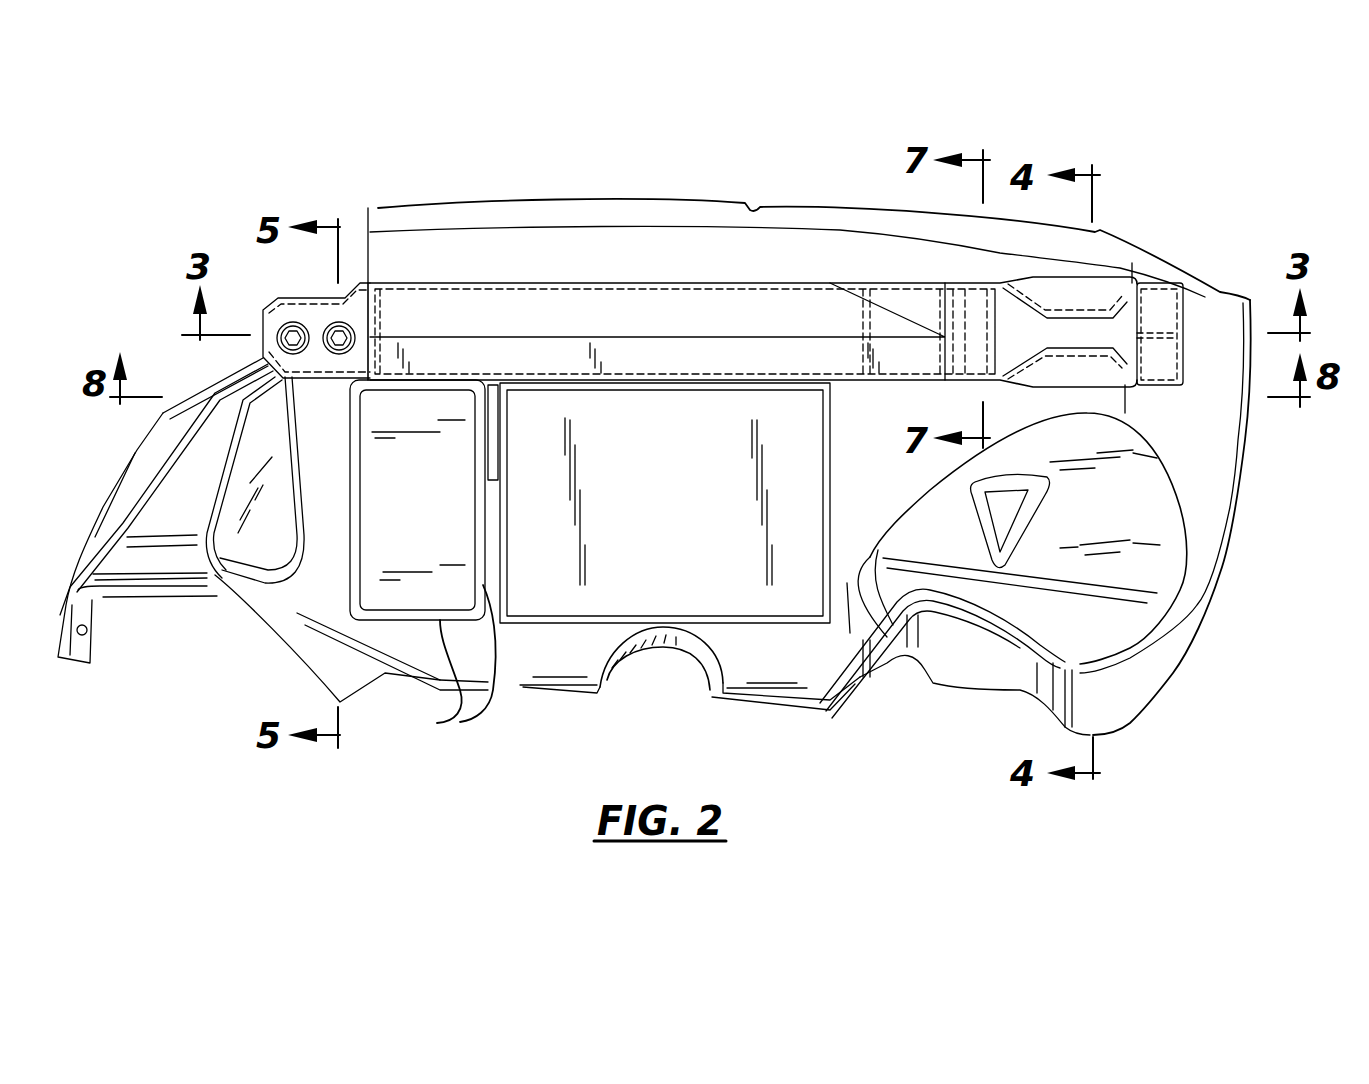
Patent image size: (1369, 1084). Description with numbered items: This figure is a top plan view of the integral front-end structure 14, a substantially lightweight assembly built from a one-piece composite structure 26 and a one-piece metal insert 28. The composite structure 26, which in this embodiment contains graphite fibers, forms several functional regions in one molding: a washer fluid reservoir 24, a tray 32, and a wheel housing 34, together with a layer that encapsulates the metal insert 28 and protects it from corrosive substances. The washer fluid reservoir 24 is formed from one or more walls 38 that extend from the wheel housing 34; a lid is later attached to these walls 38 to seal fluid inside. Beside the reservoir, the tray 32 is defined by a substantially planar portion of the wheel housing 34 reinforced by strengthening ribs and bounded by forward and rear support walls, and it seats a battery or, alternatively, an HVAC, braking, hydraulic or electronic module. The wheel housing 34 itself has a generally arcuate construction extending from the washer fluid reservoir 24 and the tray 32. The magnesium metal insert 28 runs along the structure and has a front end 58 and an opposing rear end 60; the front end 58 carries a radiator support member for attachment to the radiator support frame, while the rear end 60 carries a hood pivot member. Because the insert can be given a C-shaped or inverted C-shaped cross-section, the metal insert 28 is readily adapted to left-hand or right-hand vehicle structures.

The integral front-end structure 14 is at (210, 152).
The composite structure 26 is at (376, 205).
The front end 58 is at (273, 304).
The metal insert 28 is at (255, 359).
The washer fluid reservoir 24 is at (424, 500).
The tray 32 is at (665, 503).
The walls 38 is at (350, 577).
The wheel housing 34 is at (1165, 688).
The rear end 60 is at (1187, 307).